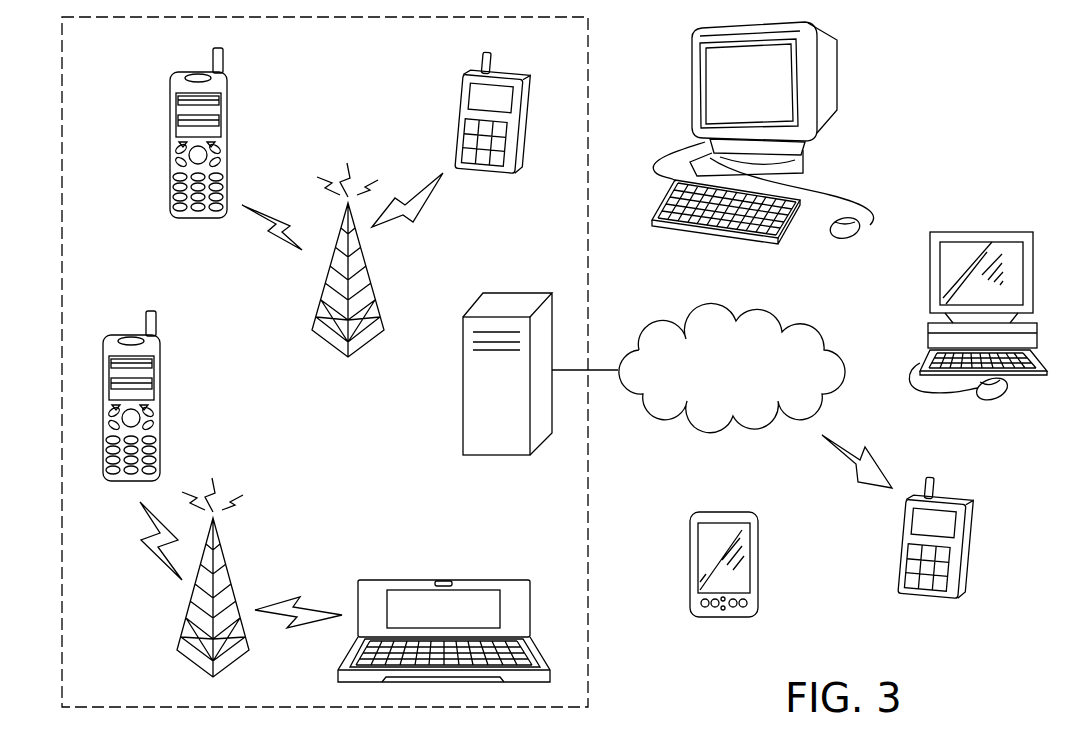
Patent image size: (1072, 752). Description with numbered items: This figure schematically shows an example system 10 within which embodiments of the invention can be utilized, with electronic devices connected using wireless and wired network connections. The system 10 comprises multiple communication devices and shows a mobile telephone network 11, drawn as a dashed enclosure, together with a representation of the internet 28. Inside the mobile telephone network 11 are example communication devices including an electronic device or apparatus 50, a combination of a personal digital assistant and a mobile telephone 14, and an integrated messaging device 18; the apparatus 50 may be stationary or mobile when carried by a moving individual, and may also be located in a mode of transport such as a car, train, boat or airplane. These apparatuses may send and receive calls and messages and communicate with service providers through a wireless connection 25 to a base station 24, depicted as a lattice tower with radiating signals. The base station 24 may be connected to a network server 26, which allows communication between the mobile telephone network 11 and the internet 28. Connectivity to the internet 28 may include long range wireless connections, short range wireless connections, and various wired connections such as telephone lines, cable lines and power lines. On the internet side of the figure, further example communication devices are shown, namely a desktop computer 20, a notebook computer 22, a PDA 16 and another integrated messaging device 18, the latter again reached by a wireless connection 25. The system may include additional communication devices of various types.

The system 10 is at (1024, 464).
The mobile telephone network 11 is at (103, 56).
The combination of a personal digital assistant (PDA) and a mobile telephone 14 is at (428, 580).
The PDA 16 is at (758, 560).
The integrated messaging device (IMD) 18 is at (460, 126).
The desktop computer 20 is at (837, 78).
The notebook computer 22 is at (978, 232).
The base station 24 is at (372, 263).
The wireless connection 25 is at (155, 557).
The network server 26 is at (463, 382).
The internet 28 is at (658, 323).
The electronic device or apparatus 50 is at (227, 141).